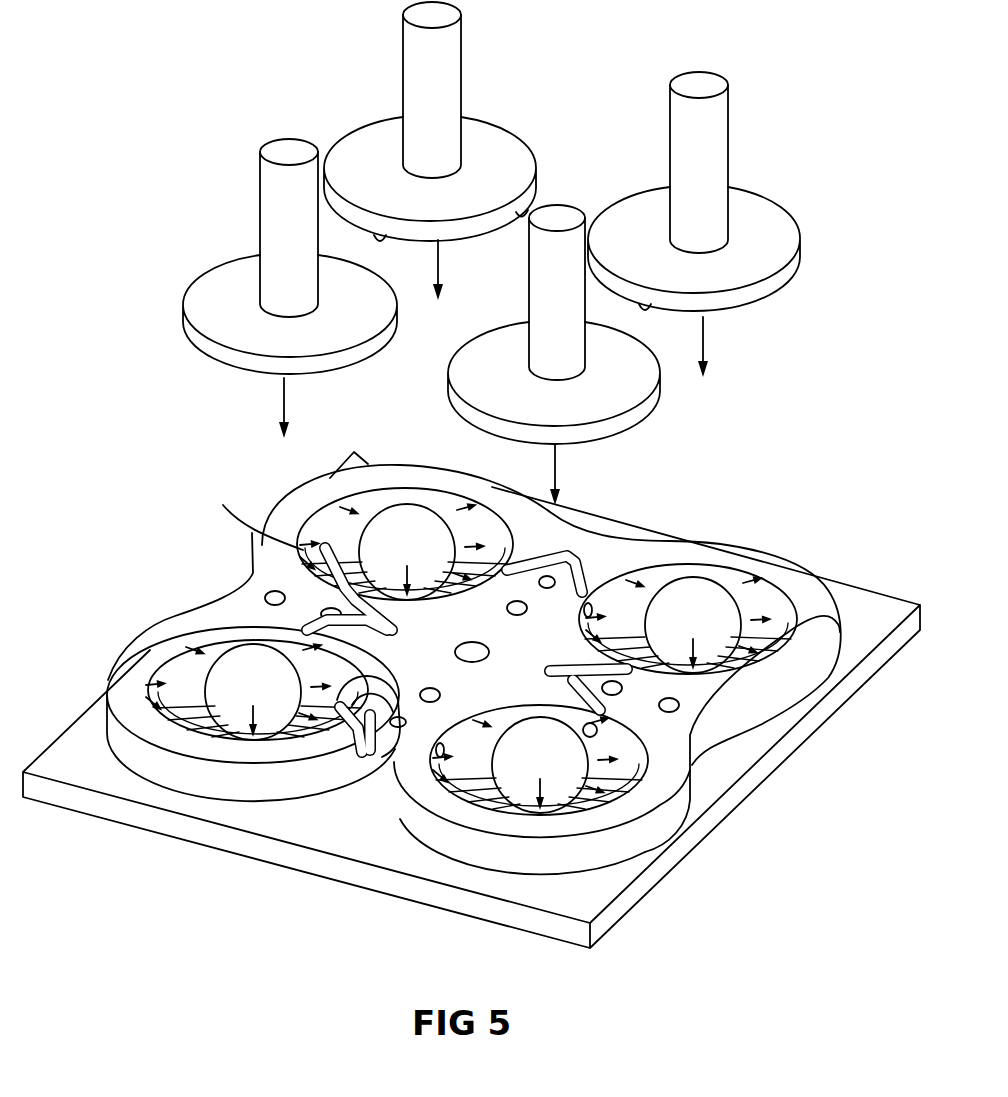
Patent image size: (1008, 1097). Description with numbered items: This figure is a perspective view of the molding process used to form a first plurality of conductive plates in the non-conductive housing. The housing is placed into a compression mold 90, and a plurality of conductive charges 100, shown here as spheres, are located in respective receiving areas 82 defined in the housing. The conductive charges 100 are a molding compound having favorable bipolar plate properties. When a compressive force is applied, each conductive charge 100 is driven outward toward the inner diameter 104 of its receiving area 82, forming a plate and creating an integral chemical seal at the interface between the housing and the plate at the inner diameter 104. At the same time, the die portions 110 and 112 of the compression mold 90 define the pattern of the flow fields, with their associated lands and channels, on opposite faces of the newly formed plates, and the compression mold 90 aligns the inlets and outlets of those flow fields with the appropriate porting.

The receiving area 82 is at (497, 572).
The compression mold 90 is at (618, 877).
The conductive charge 100 is at (397, 518).
The inner diameter 104 is at (316, 526).
The die portion 110 is at (187, 690).
The die portion 112 is at (362, 135).